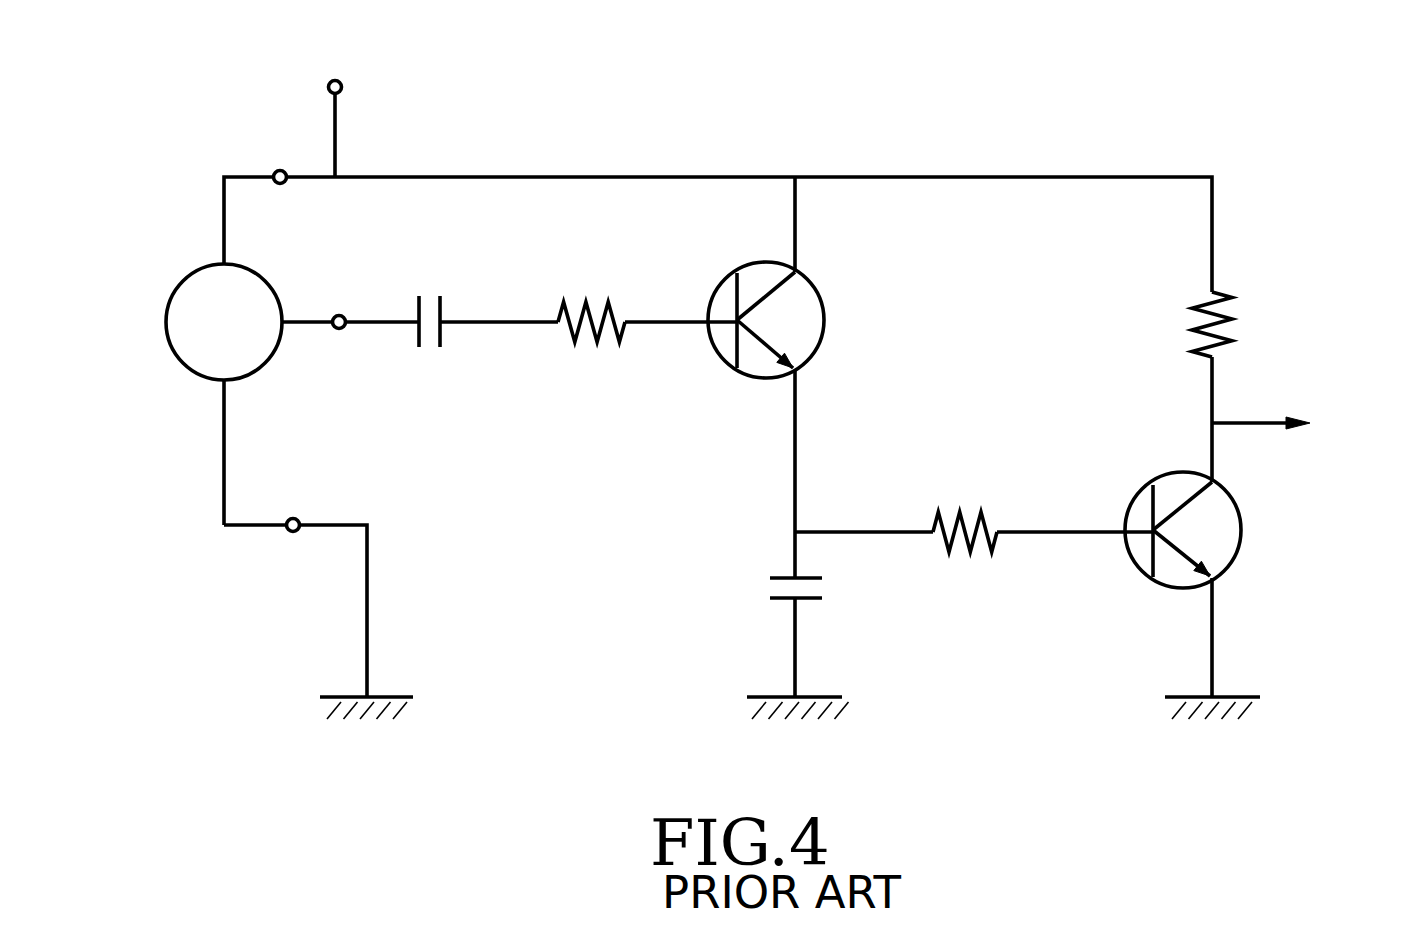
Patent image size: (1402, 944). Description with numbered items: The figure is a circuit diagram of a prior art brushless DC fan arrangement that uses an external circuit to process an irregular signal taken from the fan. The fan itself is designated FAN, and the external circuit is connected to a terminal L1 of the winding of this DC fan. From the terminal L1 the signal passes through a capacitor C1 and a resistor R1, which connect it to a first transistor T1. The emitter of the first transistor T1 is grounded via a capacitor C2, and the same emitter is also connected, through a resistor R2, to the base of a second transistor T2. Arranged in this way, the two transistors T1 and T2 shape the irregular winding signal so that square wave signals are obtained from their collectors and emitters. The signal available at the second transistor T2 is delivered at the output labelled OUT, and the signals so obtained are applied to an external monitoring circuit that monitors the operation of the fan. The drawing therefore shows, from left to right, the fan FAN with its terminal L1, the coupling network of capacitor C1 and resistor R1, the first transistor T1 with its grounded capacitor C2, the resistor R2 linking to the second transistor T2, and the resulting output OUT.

The DC fan FAN is at (183, 322).
The terminal L1 is at (350, 298).
The capacitor C1 is at (485, 349).
The resistor R1 is at (647, 350).
The first transistor T1 is at (794, 377).
The capacitor C2 is at (783, 645).
The resistor R2 is at (974, 555).
The second transistor T2 is at (1211, 595).
The output terminal OUT is at (1290, 387).